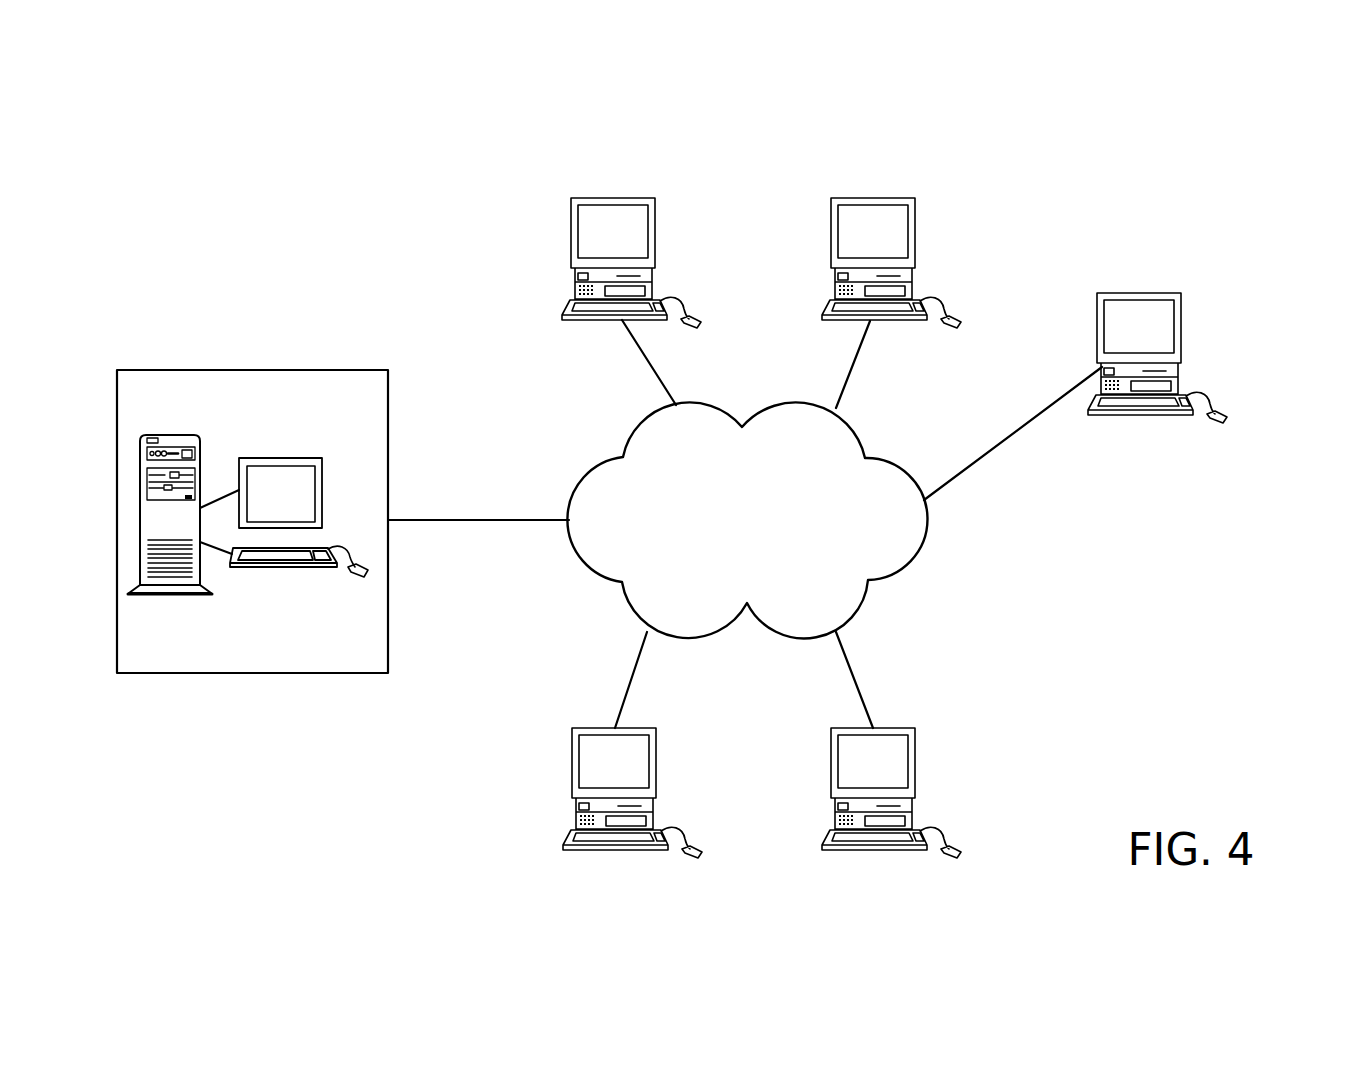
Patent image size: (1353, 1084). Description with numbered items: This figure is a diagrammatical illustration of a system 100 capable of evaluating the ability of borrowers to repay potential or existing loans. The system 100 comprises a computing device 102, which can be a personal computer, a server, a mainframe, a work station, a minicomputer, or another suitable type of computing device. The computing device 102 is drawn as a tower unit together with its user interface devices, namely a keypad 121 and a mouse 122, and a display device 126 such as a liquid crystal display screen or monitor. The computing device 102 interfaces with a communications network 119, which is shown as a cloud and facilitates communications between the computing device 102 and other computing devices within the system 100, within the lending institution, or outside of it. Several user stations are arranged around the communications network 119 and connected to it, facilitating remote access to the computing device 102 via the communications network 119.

The system 100 is at (1118, 197).
The computing device 102 is at (252, 491).
The communications network 119 is at (747, 520).
The keypad 121 is at (284, 568).
The mouse 122 is at (363, 567).
The display device 126 is at (283, 458).